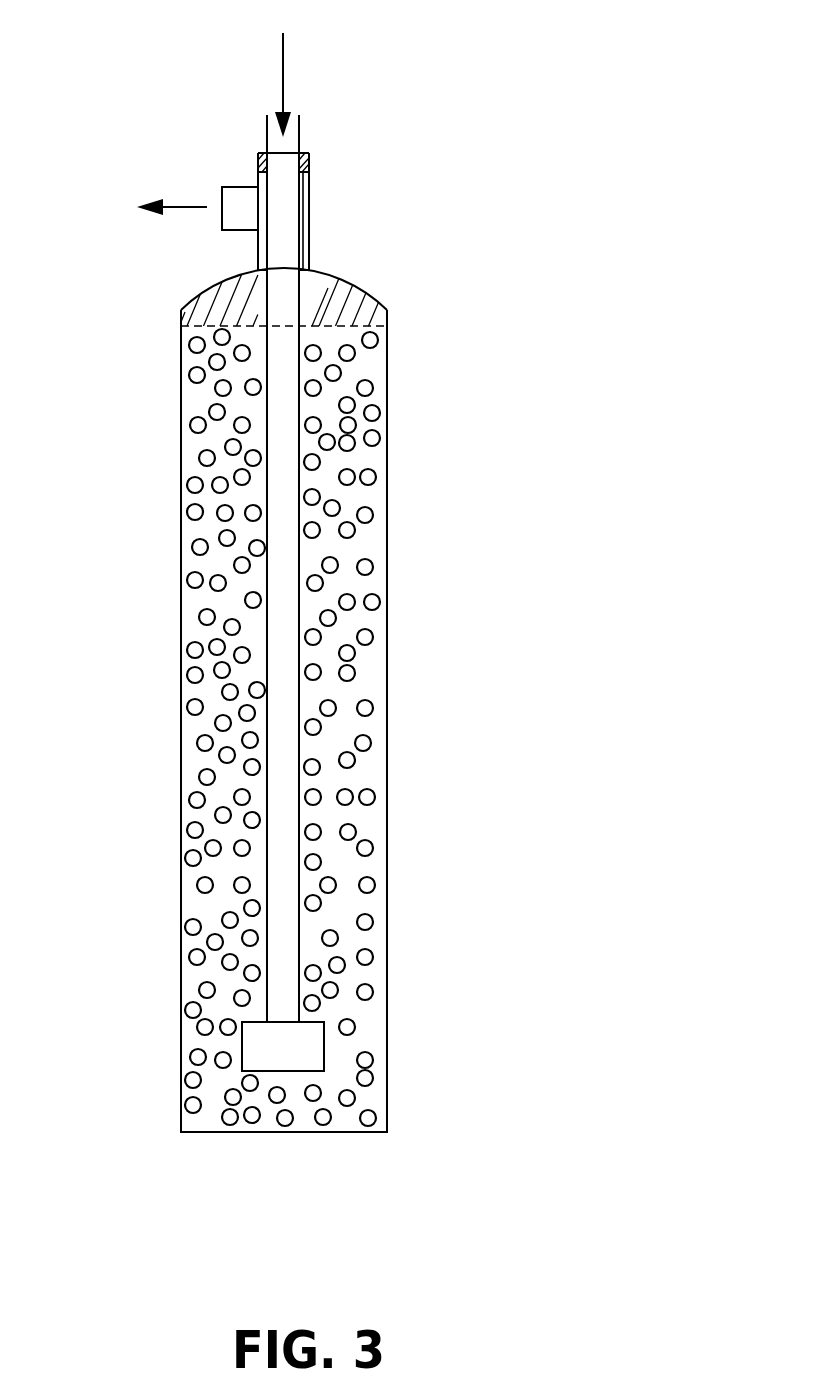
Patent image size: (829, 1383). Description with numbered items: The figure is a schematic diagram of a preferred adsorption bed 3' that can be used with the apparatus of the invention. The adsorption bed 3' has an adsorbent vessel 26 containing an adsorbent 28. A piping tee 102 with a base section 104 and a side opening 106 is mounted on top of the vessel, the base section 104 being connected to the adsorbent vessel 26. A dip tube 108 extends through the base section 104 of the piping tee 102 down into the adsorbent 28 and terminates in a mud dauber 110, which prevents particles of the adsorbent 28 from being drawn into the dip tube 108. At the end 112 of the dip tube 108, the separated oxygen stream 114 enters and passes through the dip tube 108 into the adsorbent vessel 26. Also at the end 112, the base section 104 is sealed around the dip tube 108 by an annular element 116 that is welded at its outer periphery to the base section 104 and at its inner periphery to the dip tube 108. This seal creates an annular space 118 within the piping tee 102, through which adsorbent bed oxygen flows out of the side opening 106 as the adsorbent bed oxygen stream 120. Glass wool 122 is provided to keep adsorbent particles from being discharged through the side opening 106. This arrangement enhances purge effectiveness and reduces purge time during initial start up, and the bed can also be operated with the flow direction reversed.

The adsorption bed 3' is at (67, 769).
The adsorbent vessel 26 is at (183, 1003).
The adsorbent 28 is at (345, 813).
The piping tee 102 is at (328, 185).
The base section 104 is at (310, 255).
The side opening 106 is at (222, 228).
The dip tube 108 is at (287, 498).
The mud dauber 110 is at (311, 1052).
The end of dip tube 112 is at (275, 142).
The separated oxygen stream 114 is at (285, 65).
The annular element 116 is at (310, 154).
The annular space 118 is at (303, 220).
The adsorbent bed oxygen stream 120 is at (185, 207).
The glass wool 122 is at (357, 310).